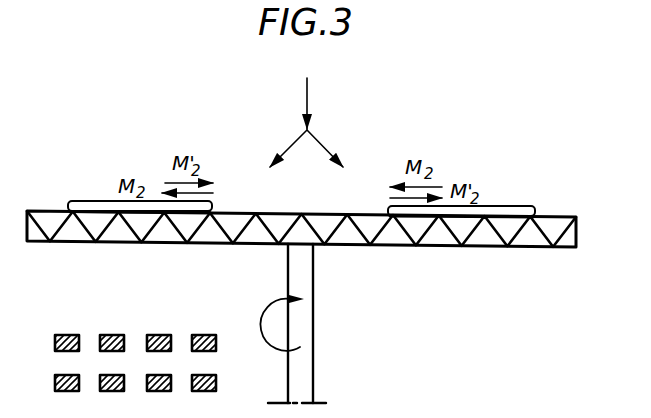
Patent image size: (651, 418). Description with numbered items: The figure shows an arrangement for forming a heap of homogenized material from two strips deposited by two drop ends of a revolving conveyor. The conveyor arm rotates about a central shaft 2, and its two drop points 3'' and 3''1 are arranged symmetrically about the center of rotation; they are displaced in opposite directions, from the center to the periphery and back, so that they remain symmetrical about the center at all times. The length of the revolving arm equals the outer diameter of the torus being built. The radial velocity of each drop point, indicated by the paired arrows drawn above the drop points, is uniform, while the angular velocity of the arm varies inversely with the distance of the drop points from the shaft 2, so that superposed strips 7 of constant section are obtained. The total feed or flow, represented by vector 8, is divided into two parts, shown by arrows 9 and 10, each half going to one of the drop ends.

The shaft 2 is at (314, 346).
The drop point 3'' is at (127, 189).
The drop point 3''1 is at (482, 195).
The superposed strips 7 is at (55, 380).
The total feed or flow 8 is at (316, 100).
The flow part 9 is at (292, 146).
The flow part 10 is at (318, 141).